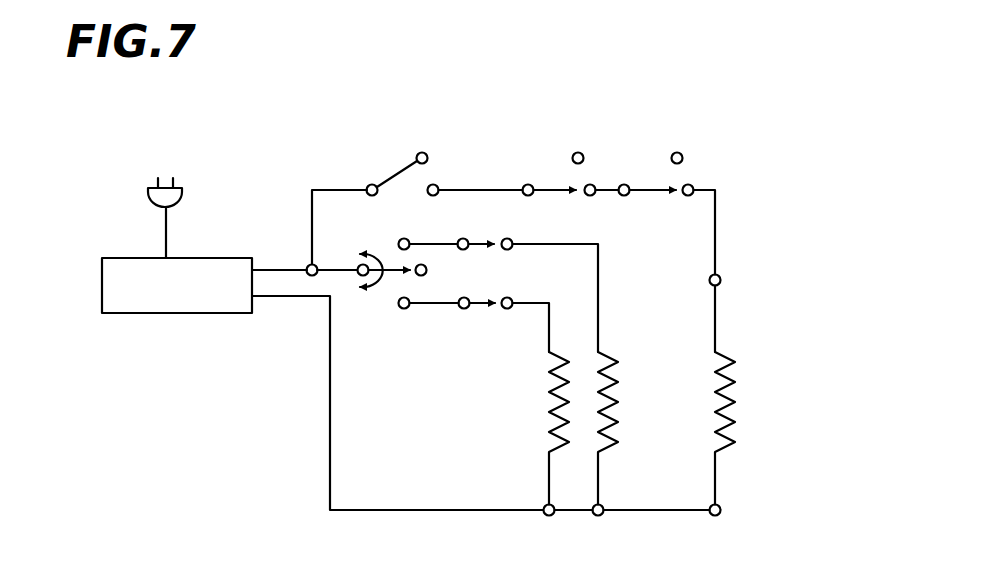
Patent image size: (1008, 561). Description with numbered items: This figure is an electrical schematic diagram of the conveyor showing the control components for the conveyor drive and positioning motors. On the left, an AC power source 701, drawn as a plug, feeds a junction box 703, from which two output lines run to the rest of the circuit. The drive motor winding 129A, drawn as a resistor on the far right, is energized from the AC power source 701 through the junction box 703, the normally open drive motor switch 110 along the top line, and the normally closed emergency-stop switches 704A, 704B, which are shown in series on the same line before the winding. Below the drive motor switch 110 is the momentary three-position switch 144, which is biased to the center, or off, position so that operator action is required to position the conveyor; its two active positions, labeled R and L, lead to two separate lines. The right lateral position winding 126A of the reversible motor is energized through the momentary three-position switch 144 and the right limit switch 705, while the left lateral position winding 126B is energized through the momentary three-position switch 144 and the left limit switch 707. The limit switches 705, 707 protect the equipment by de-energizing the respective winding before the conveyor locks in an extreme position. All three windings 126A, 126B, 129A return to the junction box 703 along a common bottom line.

The AC power source 701 is at (178, 187).
The junction box 703 is at (157, 314).
The drive motor switch 110 is at (397, 173).
The momentary three-position switch 144 is at (363, 284).
The right limit switch 705 is at (483, 241).
The left limit switch 707 is at (479, 308).
The emergency-stop switch 704A is at (556, 189).
The emergency-stop switch 704B is at (656, 189).
The right lateral position winding 126A is at (612, 412).
The left lateral position winding 126B is at (552, 403).
The drive motor winding 129A is at (731, 412).